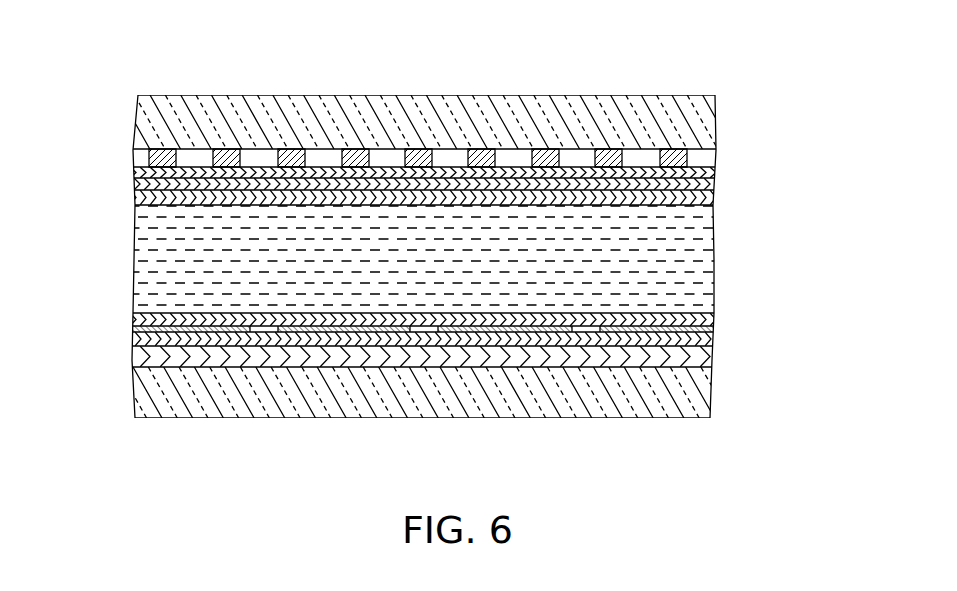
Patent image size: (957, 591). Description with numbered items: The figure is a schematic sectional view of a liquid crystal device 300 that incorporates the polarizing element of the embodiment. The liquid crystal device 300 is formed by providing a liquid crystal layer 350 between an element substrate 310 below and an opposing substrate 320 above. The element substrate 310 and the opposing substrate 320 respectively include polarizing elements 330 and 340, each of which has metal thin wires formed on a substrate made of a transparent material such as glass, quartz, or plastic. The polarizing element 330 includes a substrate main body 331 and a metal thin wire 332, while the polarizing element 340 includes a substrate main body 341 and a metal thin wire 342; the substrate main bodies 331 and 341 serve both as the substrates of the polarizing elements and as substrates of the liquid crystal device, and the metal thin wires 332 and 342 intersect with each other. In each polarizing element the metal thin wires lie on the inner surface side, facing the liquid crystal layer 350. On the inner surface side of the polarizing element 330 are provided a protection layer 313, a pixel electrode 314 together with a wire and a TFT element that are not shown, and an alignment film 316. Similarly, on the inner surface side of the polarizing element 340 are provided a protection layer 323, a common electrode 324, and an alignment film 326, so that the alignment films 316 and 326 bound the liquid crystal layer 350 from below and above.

The liquid crystal device 300 is at (690, 90).
The element substrate 310 is at (125, 313).
The protection layer 313 is at (712, 343).
The pixel electrode 314 is at (178, 330).
The alignment film 316 is at (710, 318).
The opposing substrate 320 is at (125, 95).
The protection layer 323 is at (705, 176).
The common electrode 324 is at (713, 185).
The alignment film 326 is at (713, 198).
The polarizing element 330 is at (792, 348).
The substrate main body 331 is at (703, 395).
The metal thin wire 332 is at (703, 358).
The polarizing element 340 is at (806, 97).
The substrate main body 341 is at (716, 120).
The metal thin wire 342 is at (684, 158).
The liquid crystal layer 350 is at (705, 258).